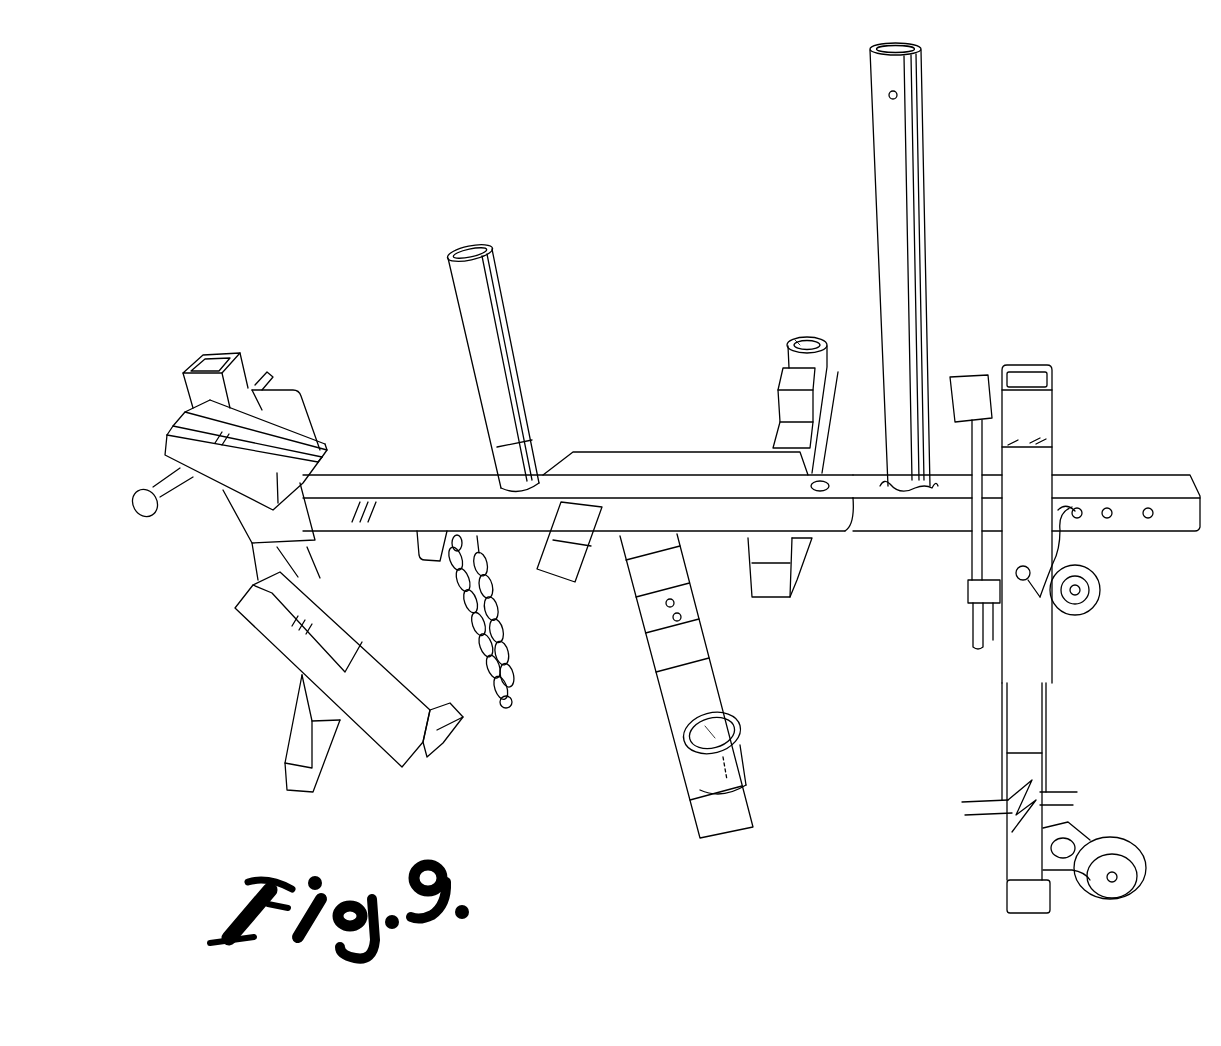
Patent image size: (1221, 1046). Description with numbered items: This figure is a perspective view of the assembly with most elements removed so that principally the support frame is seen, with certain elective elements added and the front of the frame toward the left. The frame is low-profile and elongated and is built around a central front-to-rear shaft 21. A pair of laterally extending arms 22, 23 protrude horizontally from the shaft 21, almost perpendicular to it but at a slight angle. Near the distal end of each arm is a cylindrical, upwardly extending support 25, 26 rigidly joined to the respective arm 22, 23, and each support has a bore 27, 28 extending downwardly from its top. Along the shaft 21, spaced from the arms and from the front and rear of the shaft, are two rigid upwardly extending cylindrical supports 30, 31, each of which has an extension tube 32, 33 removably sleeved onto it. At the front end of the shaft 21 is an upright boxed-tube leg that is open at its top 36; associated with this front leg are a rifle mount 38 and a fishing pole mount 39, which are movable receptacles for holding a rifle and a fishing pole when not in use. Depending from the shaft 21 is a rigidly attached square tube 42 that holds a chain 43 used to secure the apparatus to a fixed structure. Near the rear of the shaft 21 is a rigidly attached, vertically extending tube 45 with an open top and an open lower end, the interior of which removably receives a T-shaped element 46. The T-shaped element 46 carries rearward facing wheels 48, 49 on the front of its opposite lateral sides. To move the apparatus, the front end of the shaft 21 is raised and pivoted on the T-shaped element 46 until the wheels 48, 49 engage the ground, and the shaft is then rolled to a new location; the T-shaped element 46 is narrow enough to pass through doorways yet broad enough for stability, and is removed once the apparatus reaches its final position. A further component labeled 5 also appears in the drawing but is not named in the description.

The hitch receiver bar 5 is at (887, 531).
The shaft 21 is at (375, 475).
The arm 22 is at (720, 677).
The arm 23 is at (835, 408).
The support 25 is at (737, 718).
The support 26 is at (810, 336).
The bore 27 is at (685, 733).
The bore 28 is at (797, 337).
The cylindrical support 30 is at (900, 480).
The cylindrical support 31 is at (543, 447).
The extension tube 32 is at (927, 274).
The extension tube 33 is at (513, 335).
The top 36 is at (215, 352).
The rifle mount 38 is at (257, 637).
The fishing pole mount 39 is at (207, 467).
The square tube 42 is at (443, 542).
The chain 43 is at (503, 620).
The tube 45 is at (1052, 413).
The T-shaped element 46 is at (1043, 763).
The wheel 48 is at (1117, 837).
The wheel 49 is at (1100, 572).